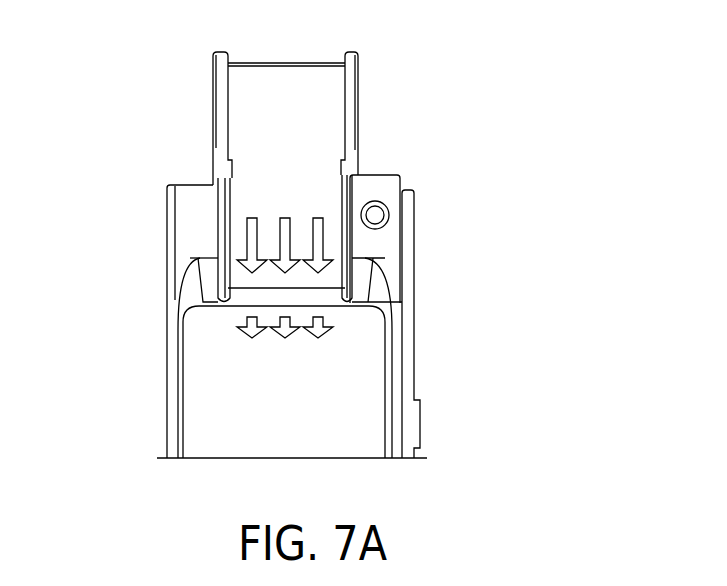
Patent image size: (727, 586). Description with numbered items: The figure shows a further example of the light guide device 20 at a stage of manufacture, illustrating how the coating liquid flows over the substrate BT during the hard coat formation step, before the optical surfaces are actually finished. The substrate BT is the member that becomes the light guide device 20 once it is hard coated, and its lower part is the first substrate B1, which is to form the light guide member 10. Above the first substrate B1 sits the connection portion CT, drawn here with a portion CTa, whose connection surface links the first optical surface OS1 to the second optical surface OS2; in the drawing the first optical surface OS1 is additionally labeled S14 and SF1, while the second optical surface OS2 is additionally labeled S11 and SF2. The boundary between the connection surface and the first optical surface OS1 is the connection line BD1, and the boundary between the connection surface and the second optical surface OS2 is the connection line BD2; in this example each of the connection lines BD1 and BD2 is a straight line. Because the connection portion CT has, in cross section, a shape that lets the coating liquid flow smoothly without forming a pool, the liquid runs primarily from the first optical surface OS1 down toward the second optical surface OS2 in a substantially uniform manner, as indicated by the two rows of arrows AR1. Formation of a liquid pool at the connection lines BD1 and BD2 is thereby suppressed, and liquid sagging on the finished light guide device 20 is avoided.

The substrate BT is at (335, 249).
The light guide device 20 is at (121, 118).
The connection portion CT is at (386, 191).
The cover portion CTa is at (332, 300).
The surface of cover S14 is at (391, 287).
The first optical surface OS1 is at (391, 287).
The surface 1 SF1 is at (330, 255).
The connection line BD1 is at (293, 288).
The connection line BD2 is at (278, 308).
The arrows AR1 is at (320, 240).
The first substrate B1 is at (340, 323).
The light guide member 10 is at (368, 428).
The surface of body S11 is at (484, 382).
The second optical surface OS2 is at (484, 382).
The surface 2 SF2 is at (368, 392).